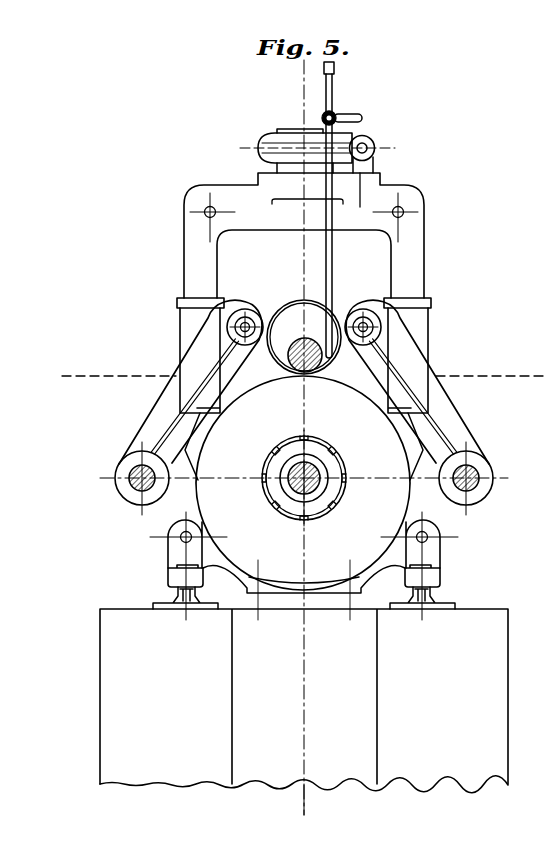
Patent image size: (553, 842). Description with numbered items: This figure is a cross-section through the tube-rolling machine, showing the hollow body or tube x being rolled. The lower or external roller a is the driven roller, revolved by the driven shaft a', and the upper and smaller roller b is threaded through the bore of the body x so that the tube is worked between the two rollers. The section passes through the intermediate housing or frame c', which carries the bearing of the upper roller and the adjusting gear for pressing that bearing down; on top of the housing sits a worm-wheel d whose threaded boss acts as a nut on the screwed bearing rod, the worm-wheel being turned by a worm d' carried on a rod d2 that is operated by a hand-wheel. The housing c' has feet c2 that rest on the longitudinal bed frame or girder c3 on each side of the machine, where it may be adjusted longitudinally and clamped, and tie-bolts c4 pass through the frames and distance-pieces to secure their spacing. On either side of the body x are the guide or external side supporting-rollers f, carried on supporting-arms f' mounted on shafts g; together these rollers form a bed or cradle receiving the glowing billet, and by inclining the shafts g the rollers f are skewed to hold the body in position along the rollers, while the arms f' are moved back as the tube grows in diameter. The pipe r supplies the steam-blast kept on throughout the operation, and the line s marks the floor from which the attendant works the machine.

The lower or external roller a is at (303, 483).
The driven shaft a' is at (291, 478).
The upper and smaller roller b is at (322, 360).
The intermediate housing or frame c' is at (302, 326).
The feet c2 is at (172, 575).
The longitudinal bed frame or girder c3 is at (178, 606).
The tie-bolts c4 is at (205, 210).
The worm-wheels d is at (291, 145).
The worms d' is at (378, 147).
The rod d2 is at (373, 155).
The guide or external side supporting-rollers f is at (303, 314).
The supporting-arms f' is at (304, 382).
The shafts g is at (135, 481).
The pipe r is at (327, 90).
The floor line s is at (305, 367).
The hollow body or tube x is at (304, 300).